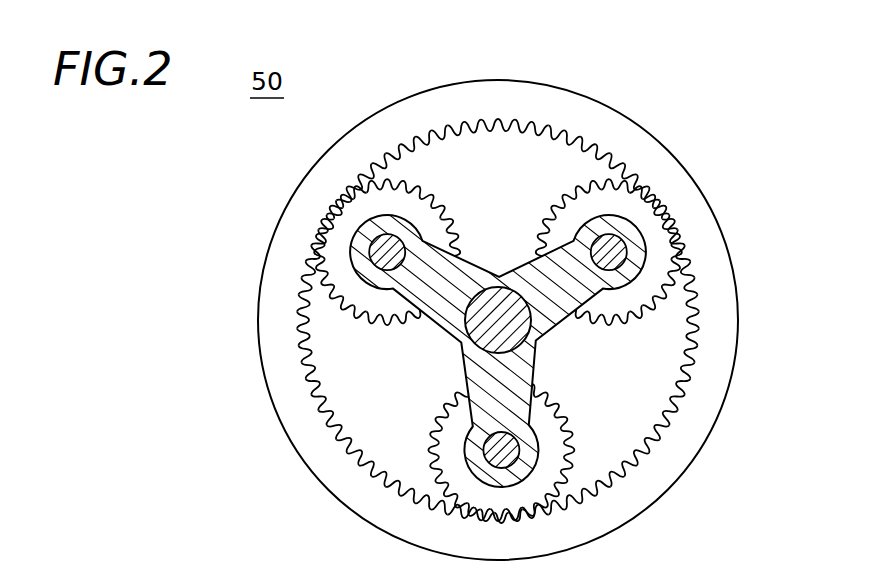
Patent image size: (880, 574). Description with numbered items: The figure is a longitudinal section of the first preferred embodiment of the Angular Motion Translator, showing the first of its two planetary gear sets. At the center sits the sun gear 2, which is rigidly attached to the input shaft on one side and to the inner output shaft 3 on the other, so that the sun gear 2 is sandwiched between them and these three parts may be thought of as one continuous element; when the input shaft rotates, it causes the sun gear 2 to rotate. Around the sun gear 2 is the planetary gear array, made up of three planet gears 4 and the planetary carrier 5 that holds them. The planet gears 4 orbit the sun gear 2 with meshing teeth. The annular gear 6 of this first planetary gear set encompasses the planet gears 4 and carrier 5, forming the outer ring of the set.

The sun gear 2 is at (440, 336).
The inner output shaft 3 is at (511, 322).
The planet gears 4 is at (653, 240).
The planetary carrier 5 is at (538, 278).
The annular gear 6 is at (660, 163).